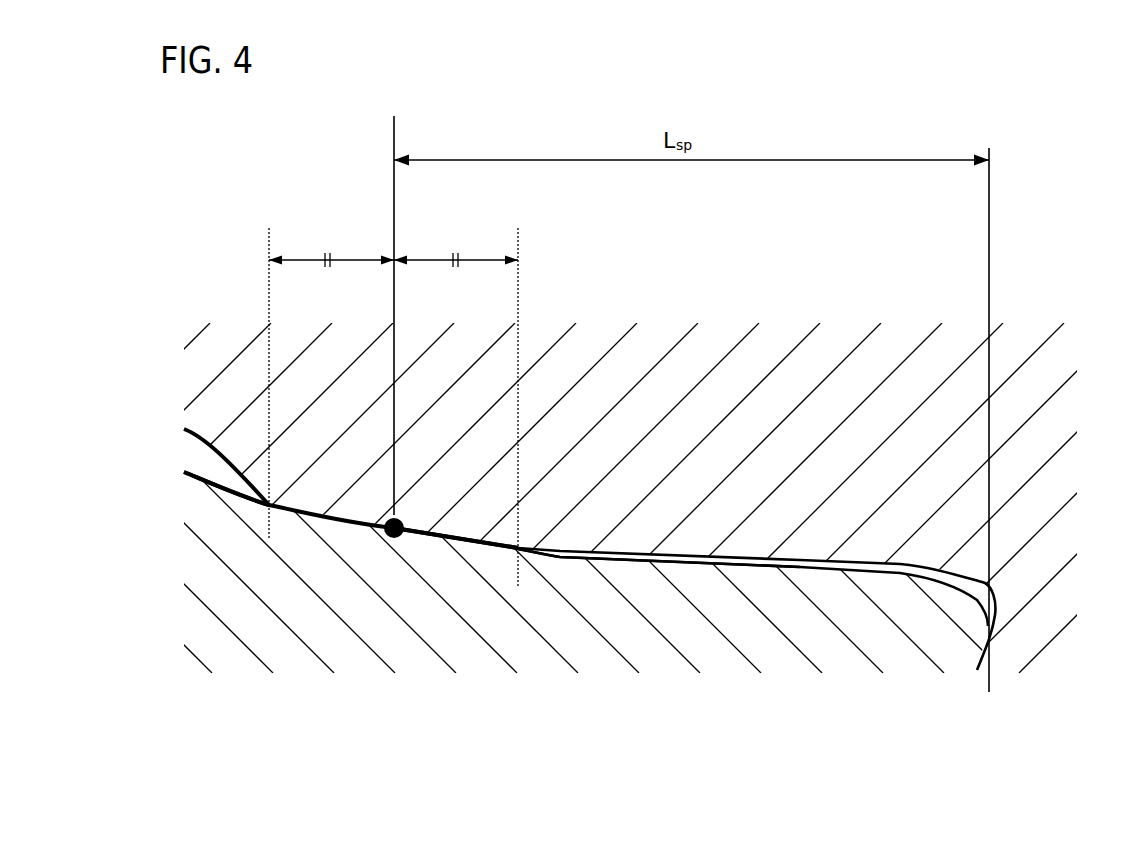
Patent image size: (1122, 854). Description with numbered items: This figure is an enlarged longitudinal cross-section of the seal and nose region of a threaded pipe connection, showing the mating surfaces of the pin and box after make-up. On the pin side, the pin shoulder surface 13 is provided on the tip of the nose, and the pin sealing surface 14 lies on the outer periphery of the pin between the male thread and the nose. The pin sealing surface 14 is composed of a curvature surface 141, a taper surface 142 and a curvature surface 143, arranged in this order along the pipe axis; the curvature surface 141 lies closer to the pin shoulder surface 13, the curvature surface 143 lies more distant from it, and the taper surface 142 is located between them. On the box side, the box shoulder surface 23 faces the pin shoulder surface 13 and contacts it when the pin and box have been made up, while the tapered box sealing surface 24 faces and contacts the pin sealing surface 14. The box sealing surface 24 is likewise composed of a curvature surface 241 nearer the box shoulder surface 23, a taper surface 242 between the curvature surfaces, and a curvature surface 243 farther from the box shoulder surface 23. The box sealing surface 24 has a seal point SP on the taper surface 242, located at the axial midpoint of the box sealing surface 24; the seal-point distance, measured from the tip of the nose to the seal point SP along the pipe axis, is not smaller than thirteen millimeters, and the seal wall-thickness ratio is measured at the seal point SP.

The pin shoulder surface 13 is at (995, 628).
The pin sealing surface 14 is at (342, 517).
The curvature surface 141 is at (517, 553).
The taper surface 142 is at (416, 530).
The curvature surface 143 is at (270, 505).
The box shoulder surface 23 is at (977, 657).
The box sealing surface 24 is at (466, 548).
The curvature surface 241 is at (518, 545).
The taper surface 242 is at (416, 532).
The curvature surface 243 is at (270, 507).
The seal point SP is at (391, 537).